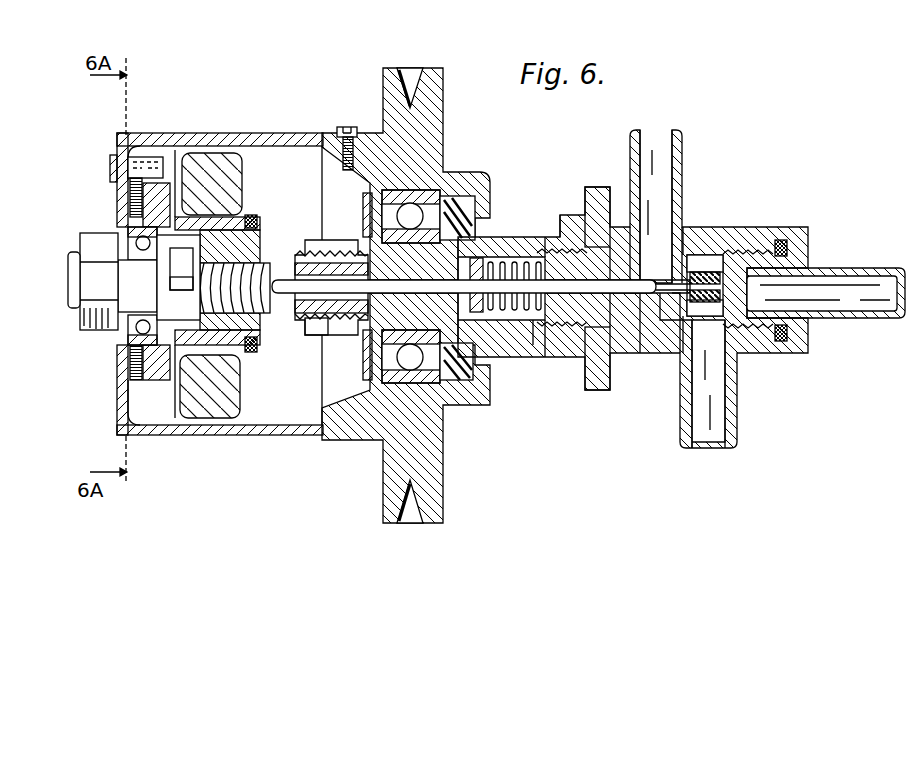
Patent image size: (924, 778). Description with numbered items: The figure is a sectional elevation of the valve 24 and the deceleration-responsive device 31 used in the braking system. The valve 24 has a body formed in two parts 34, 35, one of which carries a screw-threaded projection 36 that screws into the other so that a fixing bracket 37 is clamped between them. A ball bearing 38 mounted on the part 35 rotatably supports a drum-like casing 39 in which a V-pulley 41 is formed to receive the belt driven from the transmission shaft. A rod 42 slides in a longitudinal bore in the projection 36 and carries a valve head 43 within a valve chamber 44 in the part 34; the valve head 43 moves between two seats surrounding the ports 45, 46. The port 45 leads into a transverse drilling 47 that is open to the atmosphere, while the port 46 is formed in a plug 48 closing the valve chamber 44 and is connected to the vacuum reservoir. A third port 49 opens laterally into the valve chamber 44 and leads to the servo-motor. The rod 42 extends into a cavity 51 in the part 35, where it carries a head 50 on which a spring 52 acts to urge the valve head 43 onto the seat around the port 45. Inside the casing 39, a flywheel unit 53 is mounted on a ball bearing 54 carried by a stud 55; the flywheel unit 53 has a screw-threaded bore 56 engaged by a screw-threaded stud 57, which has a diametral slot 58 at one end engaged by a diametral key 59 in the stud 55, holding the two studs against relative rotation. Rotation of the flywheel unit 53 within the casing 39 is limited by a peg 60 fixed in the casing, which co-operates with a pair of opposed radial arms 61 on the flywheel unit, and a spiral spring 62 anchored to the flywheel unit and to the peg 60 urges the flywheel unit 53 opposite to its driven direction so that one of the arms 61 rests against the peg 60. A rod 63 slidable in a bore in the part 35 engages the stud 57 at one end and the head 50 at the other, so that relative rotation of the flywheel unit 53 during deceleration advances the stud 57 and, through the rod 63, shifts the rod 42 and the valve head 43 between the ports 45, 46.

The valve 24 is at (750, 210).
The deceleration-responsive device 31 is at (260, 128).
The valve body part 34 is at (760, 228).
The valve body part 35 is at (570, 357).
The screw-threaded projection 36 is at (550, 262).
The fixing bracket 37 is at (590, 192).
The ball bearing 38 is at (414, 208).
The drum-like casing 39 is at (383, 108).
The V-pulley 41 is at (403, 92).
The rod 42 is at (630, 353).
The valve head 43 is at (707, 273).
The valve chamber 44 is at (695, 256).
The port 45 is at (677, 340).
The port 46 is at (748, 335).
The transverse drilling 47 is at (652, 262).
The plug 48 is at (807, 249).
The third port 49 is at (713, 377).
The head 50 is at (481, 280).
The cavity 51 is at (530, 340).
The spring 52 is at (512, 317).
The flywheel unit 53 is at (195, 432).
The ball bearing 54 is at (133, 240).
The stud 55 is at (138, 285).
The screw-threaded bore 56 is at (240, 263).
The screw-threaded stud 57 is at (262, 316).
The diametral slot 58 is at (240, 380).
The diametral key 59 is at (185, 275).
The peg 60 is at (142, 160).
The radial arms 61 is at (192, 140).
The spiral spring 62 is at (132, 193).
The rod 63 is at (315, 323).